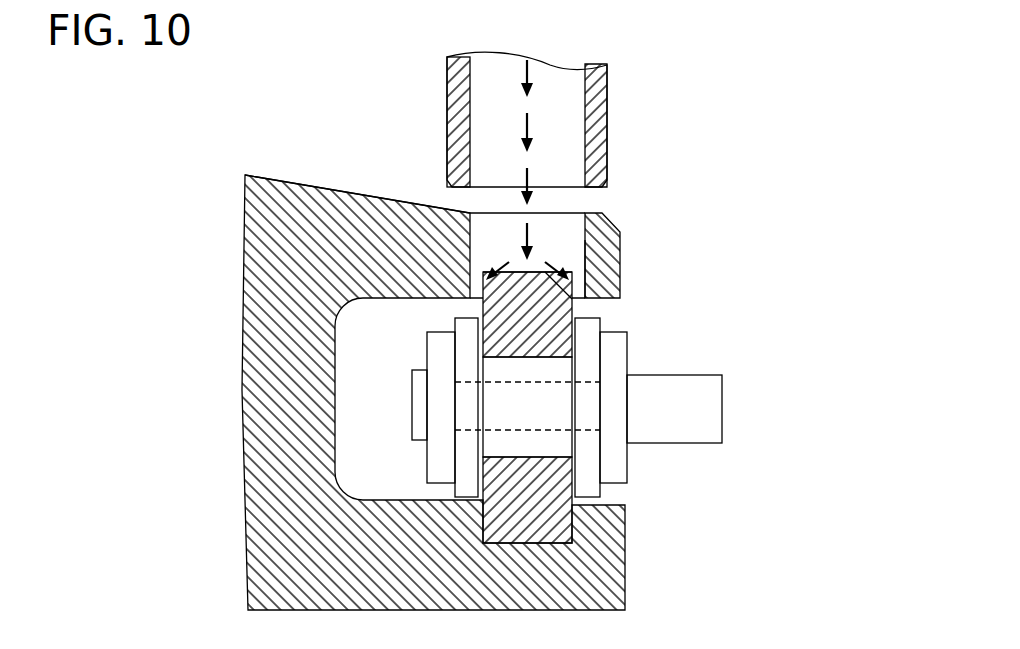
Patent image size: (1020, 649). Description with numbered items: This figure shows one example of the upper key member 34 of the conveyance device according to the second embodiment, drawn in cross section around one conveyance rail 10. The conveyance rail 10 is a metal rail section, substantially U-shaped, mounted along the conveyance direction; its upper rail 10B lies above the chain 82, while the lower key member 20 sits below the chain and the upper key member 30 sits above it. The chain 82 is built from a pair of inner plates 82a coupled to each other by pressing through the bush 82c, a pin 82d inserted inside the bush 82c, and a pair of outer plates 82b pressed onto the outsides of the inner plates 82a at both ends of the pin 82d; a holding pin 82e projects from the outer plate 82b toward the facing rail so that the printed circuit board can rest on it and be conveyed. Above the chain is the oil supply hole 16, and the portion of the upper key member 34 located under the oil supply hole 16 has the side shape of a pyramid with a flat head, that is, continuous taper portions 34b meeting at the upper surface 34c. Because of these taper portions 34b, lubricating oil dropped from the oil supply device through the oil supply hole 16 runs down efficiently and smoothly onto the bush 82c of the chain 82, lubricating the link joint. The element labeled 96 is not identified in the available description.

The conveyance rail 10 is at (247, 402).
The upper rail 10B is at (351, 195).
The oil supply hole 16 is at (583, 213).
The lower key member 20 is at (567, 522).
The upper key member 30 is at (586, 262).
The upper key member 34 is at (572, 308).
The taper portion 34b is at (566, 290).
The upper surface 34c is at (516, 268).
The chain 82 is at (583, 403).
The inner plate 82a is at (597, 325).
The outer plate 82b is at (627, 355).
The bush 82c is at (567, 447).
The pin 82d is at (503, 431).
The holding pin 82e is at (722, 410).
The upper punch 96 is at (607, 118).